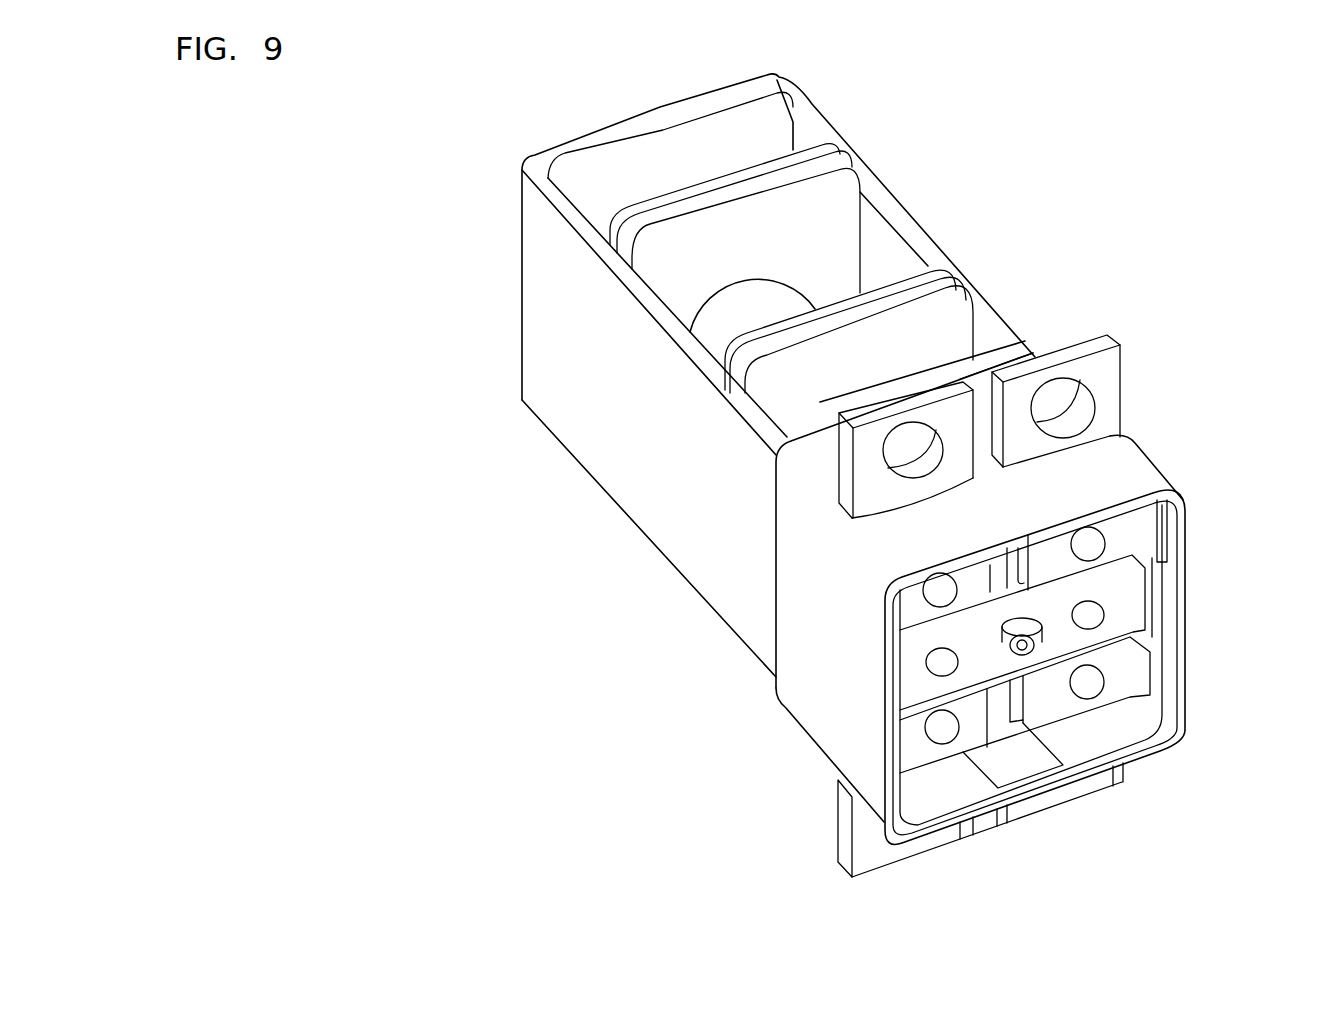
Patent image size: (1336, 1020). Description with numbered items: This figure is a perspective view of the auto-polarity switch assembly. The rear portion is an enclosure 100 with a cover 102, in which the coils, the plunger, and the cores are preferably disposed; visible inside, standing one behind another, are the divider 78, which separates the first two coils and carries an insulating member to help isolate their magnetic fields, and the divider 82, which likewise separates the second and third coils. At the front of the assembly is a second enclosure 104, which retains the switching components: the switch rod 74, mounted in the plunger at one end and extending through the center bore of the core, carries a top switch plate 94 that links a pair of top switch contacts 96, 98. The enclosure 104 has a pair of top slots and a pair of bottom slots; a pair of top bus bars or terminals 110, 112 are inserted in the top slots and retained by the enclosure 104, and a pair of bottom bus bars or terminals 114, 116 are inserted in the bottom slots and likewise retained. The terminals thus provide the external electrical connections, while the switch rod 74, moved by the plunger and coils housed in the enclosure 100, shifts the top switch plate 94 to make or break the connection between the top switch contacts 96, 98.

The switch rod 74 is at (1028, 650).
The divider 78 is at (837, 190).
The divider 82 is at (942, 322).
The top switch plate 94 is at (1127, 595).
The top switch contact 96 is at (922, 755).
The top switch contact 98 is at (1053, 713).
The enclosure 100 is at (822, 131).
The cover 102 is at (992, 363).
The enclosure 104 is at (1128, 465).
The top bus bar or terminal 110 is at (867, 472).
The top bus bar or terminal 112 is at (1112, 373).
The bottom bus bar or terminal 114 is at (873, 857).
The bottom bus bar or terminal 116 is at (1110, 790).